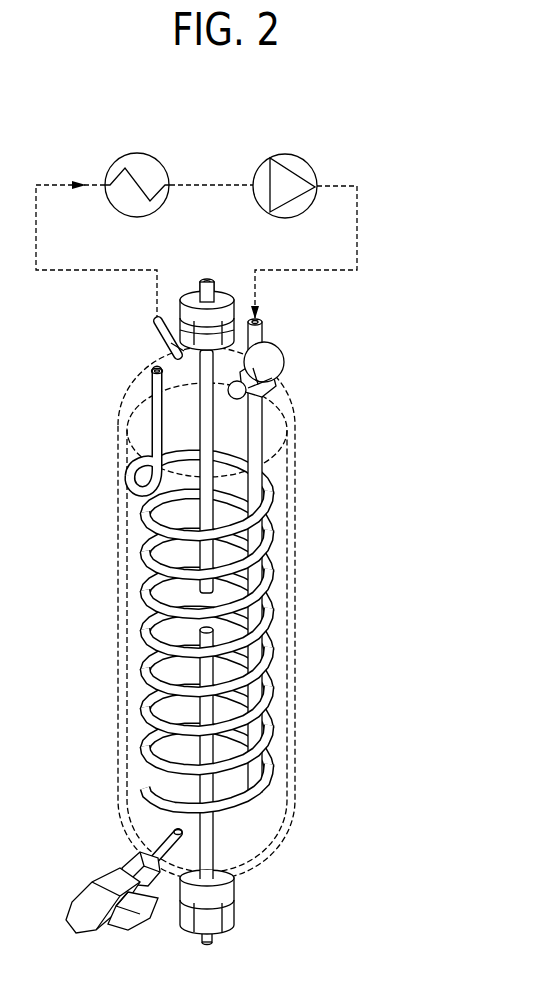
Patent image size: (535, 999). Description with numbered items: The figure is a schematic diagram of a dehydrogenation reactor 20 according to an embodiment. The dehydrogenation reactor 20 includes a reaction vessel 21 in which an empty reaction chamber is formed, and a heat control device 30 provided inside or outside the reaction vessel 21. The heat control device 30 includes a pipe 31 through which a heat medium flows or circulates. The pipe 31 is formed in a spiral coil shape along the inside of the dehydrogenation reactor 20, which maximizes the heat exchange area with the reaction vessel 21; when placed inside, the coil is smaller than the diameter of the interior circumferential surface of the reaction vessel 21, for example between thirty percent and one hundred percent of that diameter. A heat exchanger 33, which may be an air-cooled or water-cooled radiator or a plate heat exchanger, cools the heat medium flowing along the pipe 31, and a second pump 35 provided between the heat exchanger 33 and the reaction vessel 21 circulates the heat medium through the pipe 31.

The dehydrogenation reactor 20 is at (323, 545).
The reaction vessel 21 is at (295, 760).
The heat control device 30 is at (468, 103).
The pipe 31 is at (270, 483).
The heat exchanger 33 is at (137, 153).
The second pump 35 is at (284, 154).